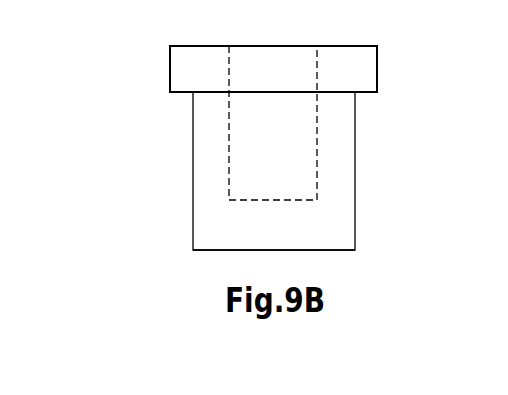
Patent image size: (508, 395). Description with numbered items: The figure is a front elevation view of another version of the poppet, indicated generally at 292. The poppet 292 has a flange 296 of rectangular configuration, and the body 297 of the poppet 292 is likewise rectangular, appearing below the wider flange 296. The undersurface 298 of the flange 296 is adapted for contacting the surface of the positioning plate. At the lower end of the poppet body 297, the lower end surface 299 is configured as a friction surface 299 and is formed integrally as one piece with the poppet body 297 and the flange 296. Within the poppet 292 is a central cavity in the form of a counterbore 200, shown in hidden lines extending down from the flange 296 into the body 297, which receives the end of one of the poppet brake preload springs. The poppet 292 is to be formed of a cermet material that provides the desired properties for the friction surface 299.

The poppet 292 is at (377, 209).
The flange 296 is at (377, 63).
The body 297 is at (355, 145).
The undersurface of flange 298 is at (180, 93).
The counterbore 200 is at (264, 200).
The friction surface 299 is at (220, 250).